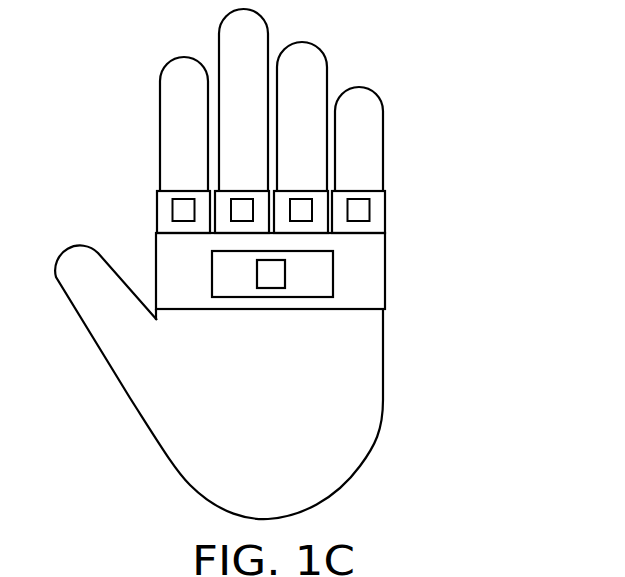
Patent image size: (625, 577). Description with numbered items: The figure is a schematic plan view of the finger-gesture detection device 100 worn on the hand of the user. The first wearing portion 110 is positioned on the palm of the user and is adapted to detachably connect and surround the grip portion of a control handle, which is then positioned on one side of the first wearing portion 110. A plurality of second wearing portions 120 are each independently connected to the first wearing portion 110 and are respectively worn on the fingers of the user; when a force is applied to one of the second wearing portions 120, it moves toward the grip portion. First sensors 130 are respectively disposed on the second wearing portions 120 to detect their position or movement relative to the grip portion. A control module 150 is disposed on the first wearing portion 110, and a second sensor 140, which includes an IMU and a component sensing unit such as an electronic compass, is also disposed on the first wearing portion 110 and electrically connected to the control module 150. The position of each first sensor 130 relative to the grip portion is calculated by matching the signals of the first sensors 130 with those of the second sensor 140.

The finger-gesture detection device 100 is at (394, 287).
The first wearing portion 110 is at (183, 248).
The second wearing portions 120 is at (167, 203).
The first sensors 130 is at (183, 205).
The second sensor 140 is at (277, 280).
The control module 150 is at (322, 271).